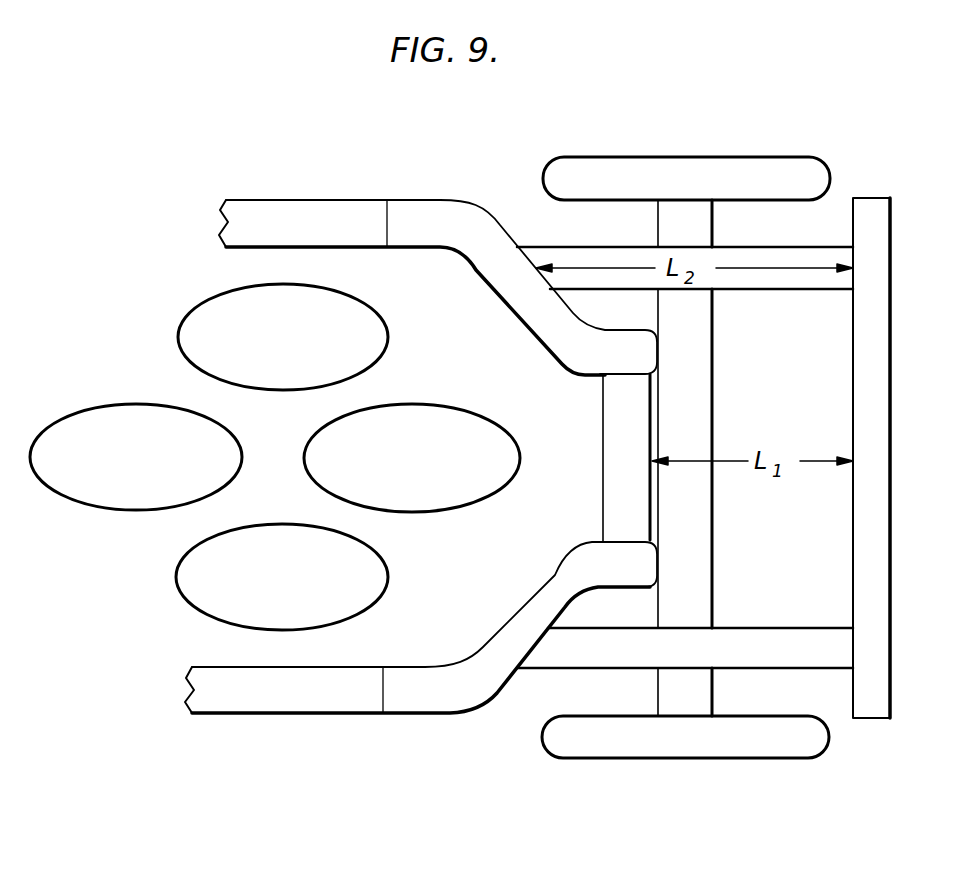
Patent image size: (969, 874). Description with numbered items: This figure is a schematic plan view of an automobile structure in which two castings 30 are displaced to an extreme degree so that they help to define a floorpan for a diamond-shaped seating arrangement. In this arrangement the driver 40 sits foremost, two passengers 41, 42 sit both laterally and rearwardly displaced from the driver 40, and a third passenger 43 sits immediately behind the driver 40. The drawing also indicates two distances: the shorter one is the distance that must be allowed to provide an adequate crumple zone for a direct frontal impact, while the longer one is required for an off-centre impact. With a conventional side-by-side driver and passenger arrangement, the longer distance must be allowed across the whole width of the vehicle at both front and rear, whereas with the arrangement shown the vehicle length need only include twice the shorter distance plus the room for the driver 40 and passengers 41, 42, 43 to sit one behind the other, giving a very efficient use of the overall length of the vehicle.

The casting 30 is at (487, 200).
The driver 40 is at (411, 469).
The passenger 41 is at (280, 350).
The passenger 42 is at (278, 590).
The third passenger 43 is at (130, 467).